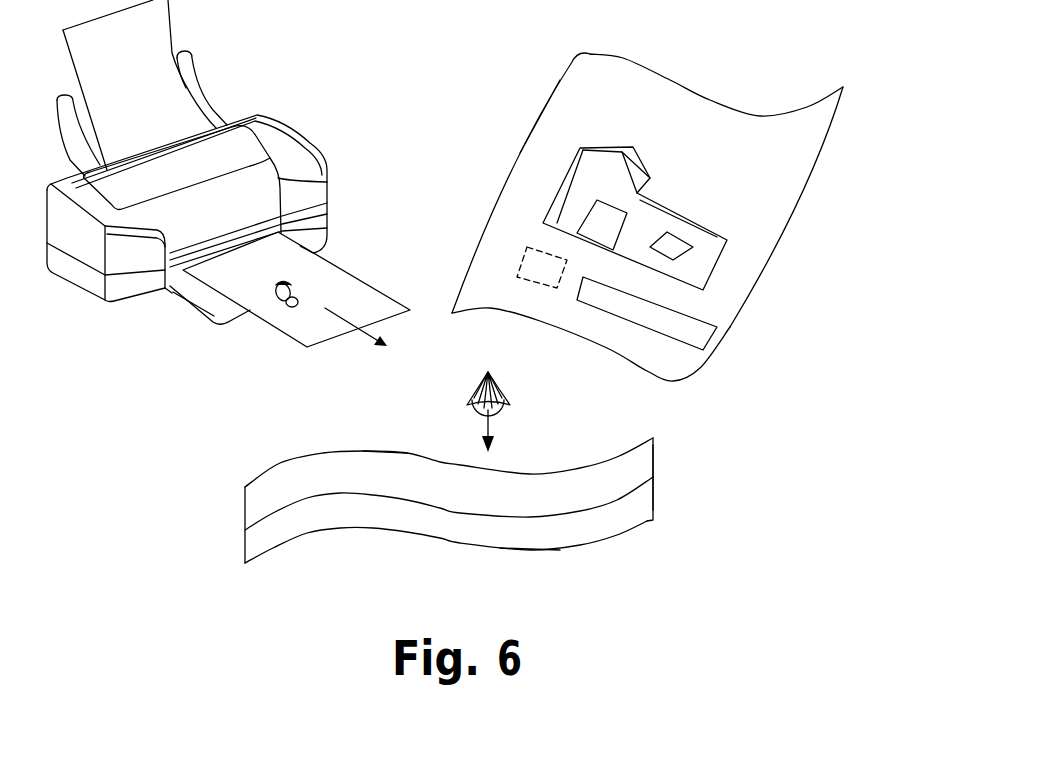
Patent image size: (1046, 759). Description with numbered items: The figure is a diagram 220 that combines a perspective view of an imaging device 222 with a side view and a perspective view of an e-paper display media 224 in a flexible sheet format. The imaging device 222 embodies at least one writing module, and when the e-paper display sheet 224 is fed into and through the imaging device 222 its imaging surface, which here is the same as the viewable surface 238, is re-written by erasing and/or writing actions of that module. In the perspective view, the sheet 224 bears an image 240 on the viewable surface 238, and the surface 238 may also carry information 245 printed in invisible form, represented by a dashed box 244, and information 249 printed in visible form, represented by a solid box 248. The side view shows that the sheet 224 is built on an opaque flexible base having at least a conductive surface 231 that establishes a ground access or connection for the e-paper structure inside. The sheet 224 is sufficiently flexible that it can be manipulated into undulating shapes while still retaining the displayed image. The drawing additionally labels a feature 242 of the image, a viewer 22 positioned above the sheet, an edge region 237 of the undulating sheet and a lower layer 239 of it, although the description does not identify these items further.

The diagram 220 is at (415, 54).
The imaging device 222 is at (305, 131).
The e-paper display media 224 is at (720, 98).
The viewable surface 238 is at (563, 111).
The image 240 is at (555, 154).
The roof line of image 242 is at (633, 147).
The dashed box 244 is at (535, 282).
The information printed in invisible form 245 is at (527, 260).
The solid box 248 is at (718, 339).
The information printed in visible form 249 is at (690, 343).
The viewer eye 22 is at (511, 388).
The conductive surface 231 is at (633, 528).
The edge of e-paper 237 is at (668, 469).
The back layer of e-paper 239 is at (540, 551).